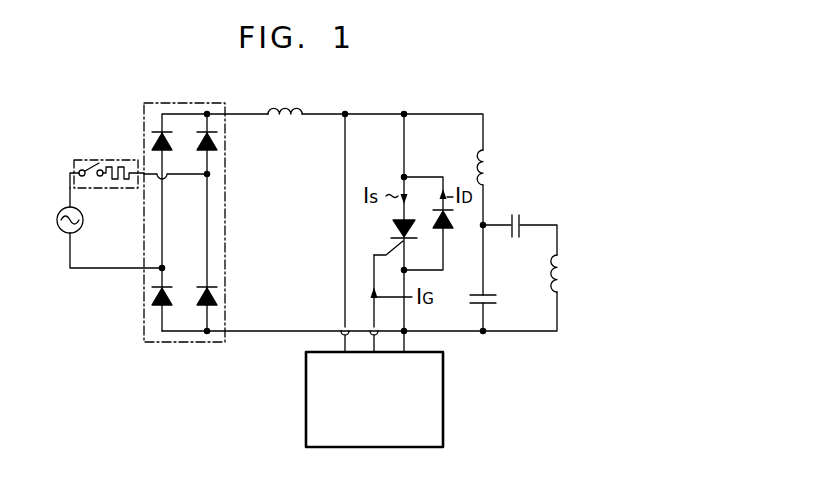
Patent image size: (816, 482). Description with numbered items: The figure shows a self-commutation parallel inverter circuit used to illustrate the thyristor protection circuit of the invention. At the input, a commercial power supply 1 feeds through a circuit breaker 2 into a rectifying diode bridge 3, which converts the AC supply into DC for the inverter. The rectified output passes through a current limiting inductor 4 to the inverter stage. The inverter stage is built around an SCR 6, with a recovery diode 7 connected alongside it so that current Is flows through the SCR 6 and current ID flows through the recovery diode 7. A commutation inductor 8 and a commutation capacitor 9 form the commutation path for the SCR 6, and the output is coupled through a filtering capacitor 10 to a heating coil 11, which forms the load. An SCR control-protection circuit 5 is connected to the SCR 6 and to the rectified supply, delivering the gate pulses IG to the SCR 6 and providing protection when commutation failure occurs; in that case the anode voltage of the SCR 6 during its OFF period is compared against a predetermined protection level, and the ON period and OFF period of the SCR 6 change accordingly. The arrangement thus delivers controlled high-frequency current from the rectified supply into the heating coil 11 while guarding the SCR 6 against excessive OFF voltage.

The commercial power supply 1 is at (55, 217).
The circuit breaker 2 is at (80, 161).
The rectifying diode bridge 3 is at (163, 344).
The current limiting inductor 4 is at (284, 120).
The SCR control-protection circuit 5 is at (305, 378).
The SCR 6 is at (398, 228).
The recovery diode 7 is at (448, 232).
The commutation inductor 8 is at (490, 166).
The commutation capacitor 9 is at (496, 300).
The filtering capacitor 10 is at (520, 214).
The heating coil 11 is at (564, 275).